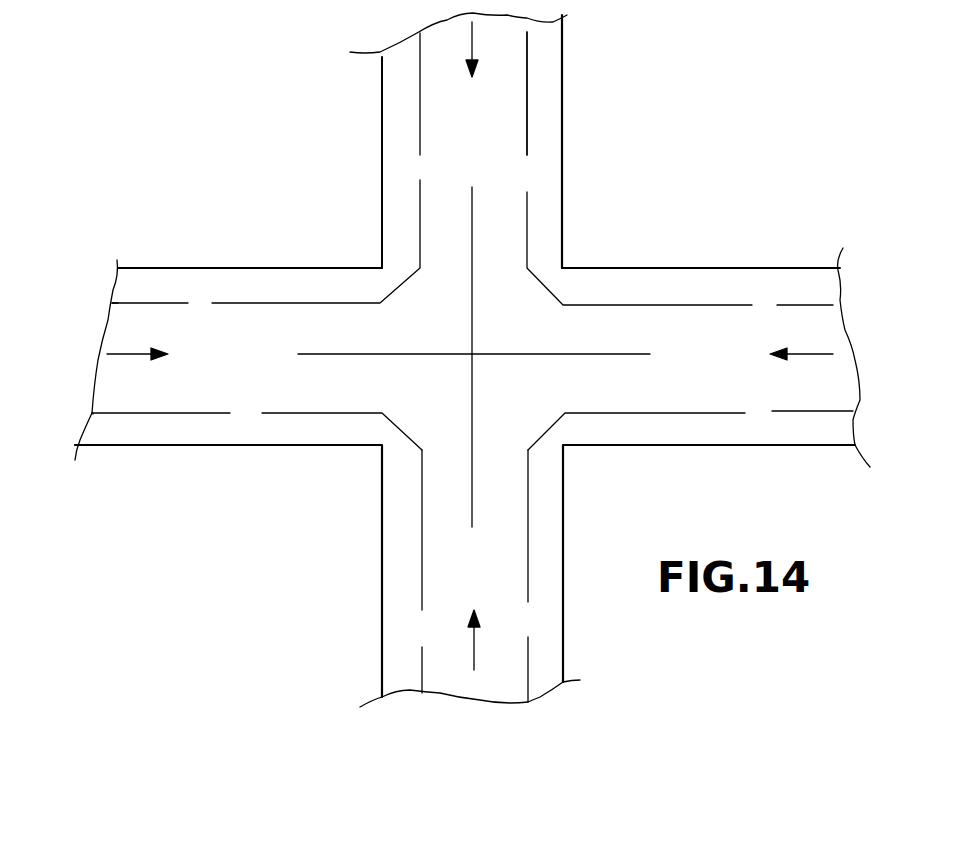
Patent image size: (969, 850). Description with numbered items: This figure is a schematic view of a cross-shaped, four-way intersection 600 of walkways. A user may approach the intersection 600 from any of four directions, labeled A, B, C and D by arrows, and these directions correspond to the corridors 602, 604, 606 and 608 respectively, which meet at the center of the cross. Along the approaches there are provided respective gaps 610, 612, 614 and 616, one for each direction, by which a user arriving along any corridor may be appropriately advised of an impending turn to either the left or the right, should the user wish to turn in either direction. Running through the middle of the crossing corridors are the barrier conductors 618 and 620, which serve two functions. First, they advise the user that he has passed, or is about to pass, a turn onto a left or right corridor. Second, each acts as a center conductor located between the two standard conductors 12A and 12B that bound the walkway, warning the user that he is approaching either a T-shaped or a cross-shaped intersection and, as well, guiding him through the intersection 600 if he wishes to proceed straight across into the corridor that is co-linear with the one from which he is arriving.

The four-way intersection 600 is at (717, 217).
The corridor 602 is at (222, 226).
The corridor 604 is at (545, 105).
The corridor 606 is at (715, 288).
The corridor 608 is at (398, 668).
The gap 610 is at (247, 412).
The gap 612 is at (530, 170).
The gap 614 is at (758, 408).
The gap 616 is at (422, 628).
The barrier conductor 618 is at (472, 212).
The barrier conductor 620 is at (620, 350).
The standard conductor 12A is at (115, 293).
The standard conductor 12B is at (93, 413).